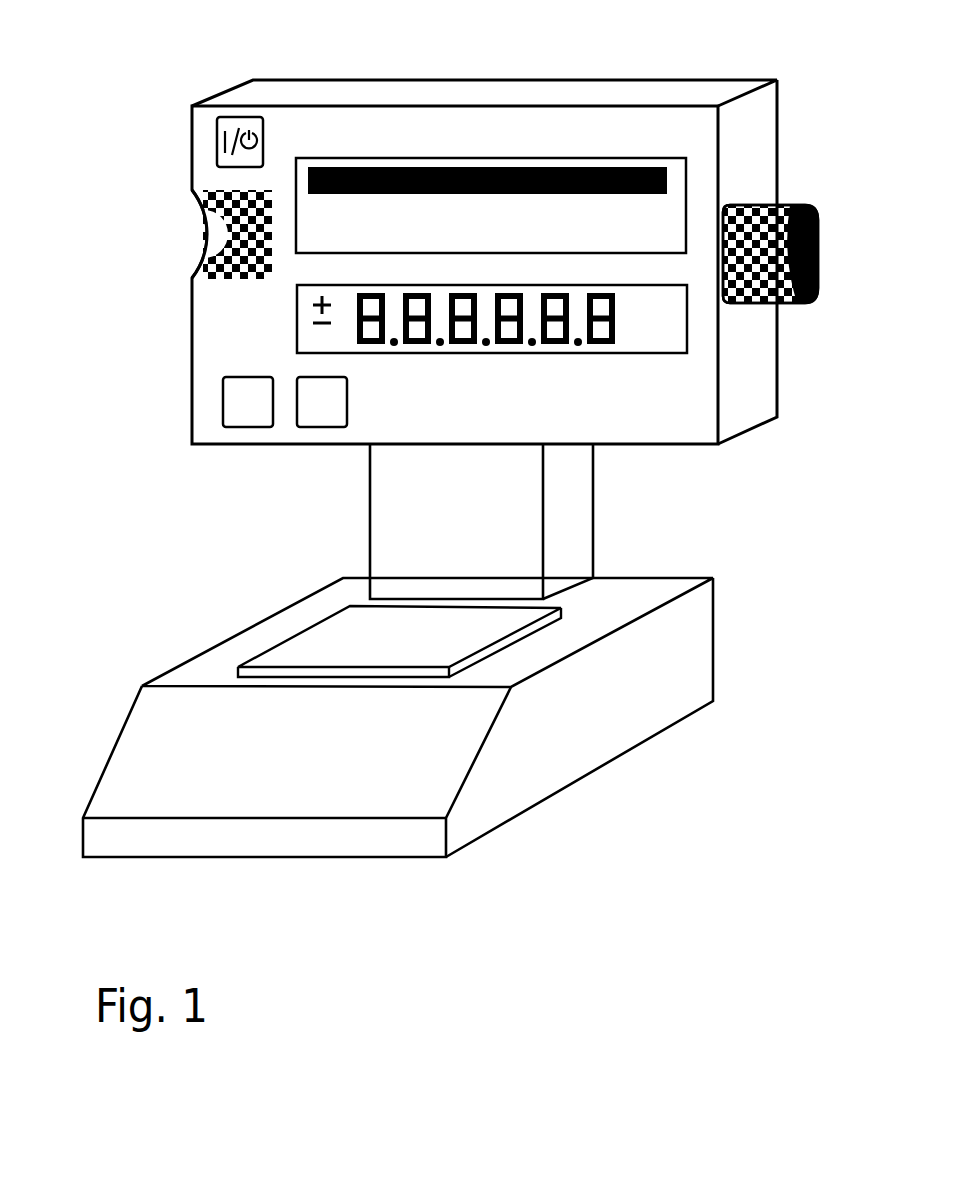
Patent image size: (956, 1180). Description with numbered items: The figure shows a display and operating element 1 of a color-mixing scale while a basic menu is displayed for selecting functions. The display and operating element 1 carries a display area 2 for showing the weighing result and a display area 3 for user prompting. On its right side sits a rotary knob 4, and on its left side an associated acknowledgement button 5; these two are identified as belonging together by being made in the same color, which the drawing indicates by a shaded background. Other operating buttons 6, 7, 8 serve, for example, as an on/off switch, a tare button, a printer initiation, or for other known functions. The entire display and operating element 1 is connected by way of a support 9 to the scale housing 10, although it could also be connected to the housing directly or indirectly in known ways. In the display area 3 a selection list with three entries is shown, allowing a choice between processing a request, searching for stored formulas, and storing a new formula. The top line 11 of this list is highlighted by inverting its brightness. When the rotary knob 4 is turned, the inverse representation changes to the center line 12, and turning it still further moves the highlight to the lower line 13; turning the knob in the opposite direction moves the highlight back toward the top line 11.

The display and operating element 1 is at (684, 430).
The display area for the weighing result 2 is at (670, 336).
The display area for user prompting 3 is at (683, 204).
The rotary knob 4 is at (795, 209).
The acknowledgement button 5 is at (215, 234).
The operating button 6 is at (215, 135).
The operating button 7 is at (237, 421).
The operating button 8 is at (315, 421).
The support 9 is at (574, 533).
The scale housing 10 is at (588, 725).
The top line 11 is at (459, 167).
The center line 12 is at (342, 207).
The lower line 13 is at (347, 242).